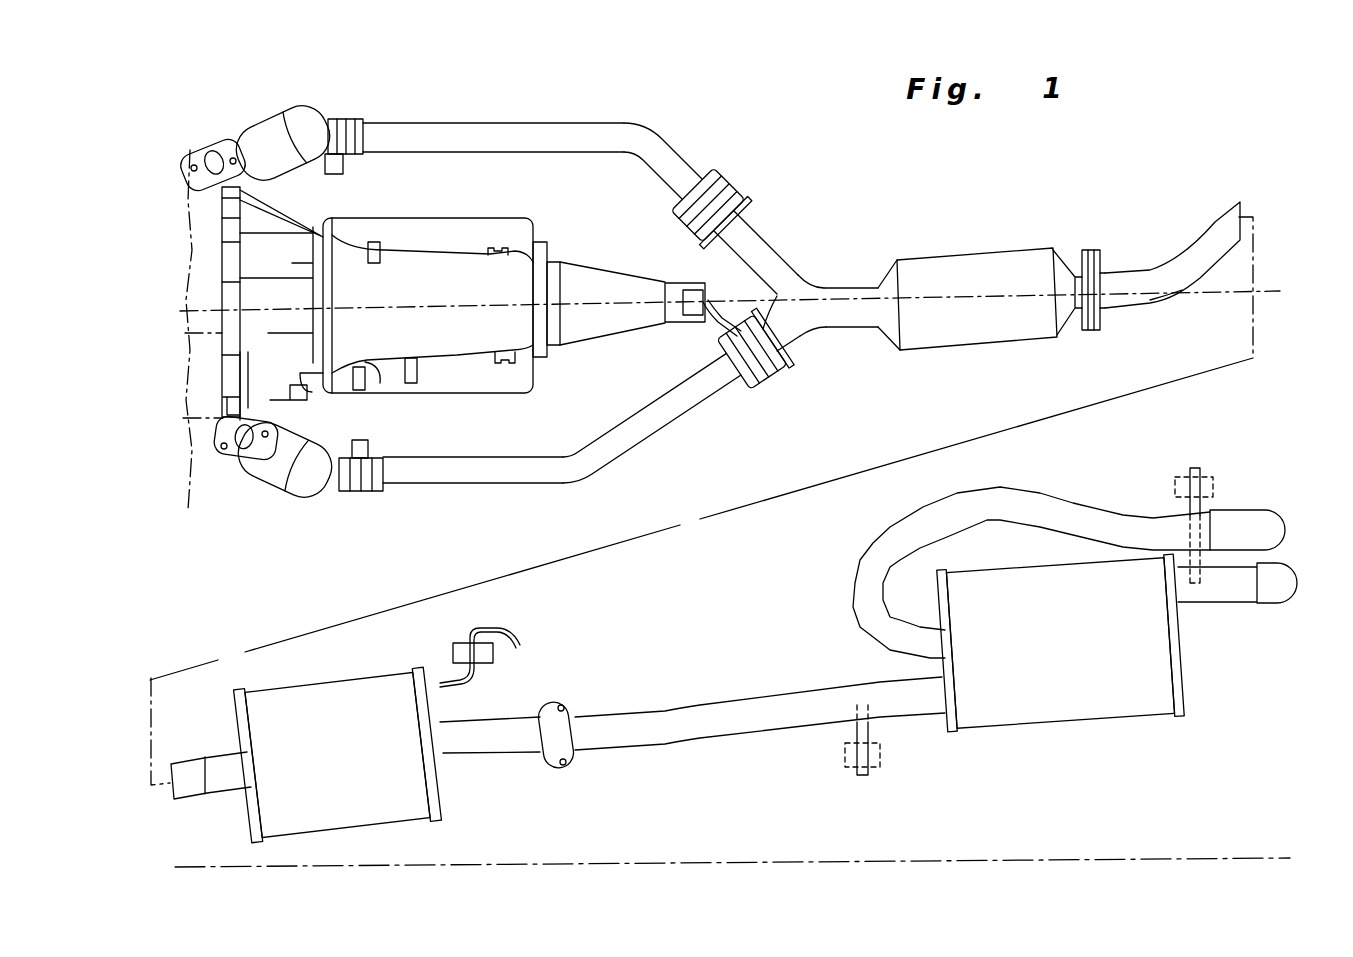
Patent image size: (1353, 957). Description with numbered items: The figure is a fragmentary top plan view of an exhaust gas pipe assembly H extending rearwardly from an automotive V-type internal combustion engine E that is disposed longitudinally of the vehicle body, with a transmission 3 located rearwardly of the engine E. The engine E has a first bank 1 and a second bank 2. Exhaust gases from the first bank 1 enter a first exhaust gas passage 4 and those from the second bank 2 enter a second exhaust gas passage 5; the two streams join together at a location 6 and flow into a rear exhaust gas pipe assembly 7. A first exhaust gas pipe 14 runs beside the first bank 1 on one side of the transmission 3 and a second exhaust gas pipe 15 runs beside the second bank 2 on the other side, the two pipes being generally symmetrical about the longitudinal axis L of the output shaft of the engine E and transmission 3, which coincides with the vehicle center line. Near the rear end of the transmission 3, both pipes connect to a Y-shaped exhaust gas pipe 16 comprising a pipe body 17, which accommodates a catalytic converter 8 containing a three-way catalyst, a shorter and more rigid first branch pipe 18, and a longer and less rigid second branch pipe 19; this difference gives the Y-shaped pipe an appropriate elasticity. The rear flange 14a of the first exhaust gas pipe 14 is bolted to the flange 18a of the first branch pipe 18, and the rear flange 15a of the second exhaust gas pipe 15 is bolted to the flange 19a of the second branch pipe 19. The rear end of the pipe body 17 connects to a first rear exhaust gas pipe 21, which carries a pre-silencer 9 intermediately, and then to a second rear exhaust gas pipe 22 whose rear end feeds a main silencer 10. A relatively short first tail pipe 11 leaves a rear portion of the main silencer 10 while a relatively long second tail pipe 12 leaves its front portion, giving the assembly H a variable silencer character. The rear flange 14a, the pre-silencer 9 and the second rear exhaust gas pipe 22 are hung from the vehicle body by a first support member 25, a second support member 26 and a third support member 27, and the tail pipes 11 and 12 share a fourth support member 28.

The first bank 1 is at (701, 467).
The second bank 2 is at (189, 148).
The transmission 3 is at (558, 244).
The first exhaust gas passage 4 is at (498, 492).
The second exhaust gas passage 5 is at (614, 120).
The location 6 is at (800, 300).
The rear exhaust gas pipe assembly 7 is at (1172, 240).
The catalytic converter 8 is at (1018, 258).
The pre-silencer 9 is at (358, 813).
The main silencer 10 is at (1003, 716).
The first tail pipe 11 is at (1237, 587).
The second tail pipe 12 is at (1110, 516).
The first exhaust gas pipe 14 is at (437, 483).
The rear flange 14a is at (768, 388).
The second exhaust gas pipe 15 is at (448, 125).
The rear flange 15a is at (722, 190).
The Y-shaped exhaust gas pipe 16 is at (868, 336).
The pipe body 17 is at (843, 320).
The first branch pipe 18 is at (793, 350).
The flange 18a is at (782, 390).
The second branch pipe 19 is at (770, 242).
The flange 19a is at (735, 196).
The first rear exhaust gas pipe 21 is at (1150, 298).
The second rear exhaust gas pipe 22 is at (668, 732).
The first support member 25 is at (700, 330).
The second support member 26 is at (498, 671).
The third support member 27 is at (838, 738).
The fourth support member 28 is at (1218, 502).
The engine E is at (237, 458).
The exhaust gas pipe assembly H is at (660, 686).
The longitudinal axis L is at (381, 305).